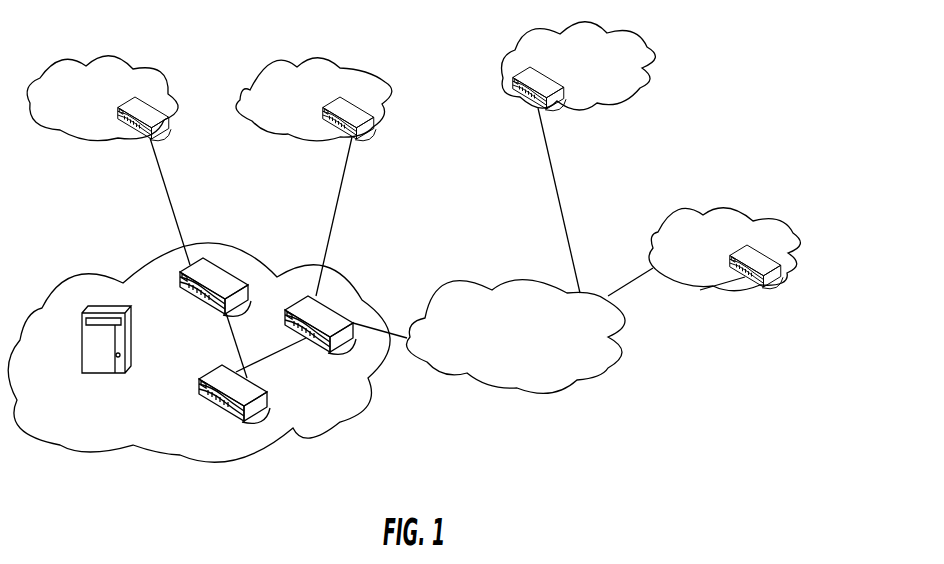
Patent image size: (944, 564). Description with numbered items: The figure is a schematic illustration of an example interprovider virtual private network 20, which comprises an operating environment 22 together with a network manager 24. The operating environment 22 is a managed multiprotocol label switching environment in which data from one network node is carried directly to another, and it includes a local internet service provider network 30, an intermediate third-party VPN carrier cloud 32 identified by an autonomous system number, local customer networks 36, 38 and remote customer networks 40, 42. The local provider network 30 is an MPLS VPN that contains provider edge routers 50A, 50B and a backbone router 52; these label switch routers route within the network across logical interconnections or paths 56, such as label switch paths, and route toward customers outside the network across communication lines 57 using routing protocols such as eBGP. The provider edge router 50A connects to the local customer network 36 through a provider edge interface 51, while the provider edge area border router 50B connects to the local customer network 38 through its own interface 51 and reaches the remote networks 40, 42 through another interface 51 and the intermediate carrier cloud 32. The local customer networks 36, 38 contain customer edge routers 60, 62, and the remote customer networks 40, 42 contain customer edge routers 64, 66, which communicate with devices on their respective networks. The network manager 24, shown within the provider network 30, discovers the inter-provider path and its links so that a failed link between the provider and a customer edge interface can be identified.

The interprovider virtual private network 20 is at (443, 146).
The operating environment 22 is at (431, 431).
The network manager 24 is at (106, 303).
The local internet service provider network 30 is at (78, 450).
The intermediate VPN carrier cloud 32 is at (608, 370).
The local customer network 36 is at (110, 60).
The local customer network 38 is at (312, 60).
The remote customer network 40 is at (588, 28).
The remote customer network 42 is at (729, 210).
The provider edge router 50A is at (218, 268).
The provider edge area border router 50B is at (336, 296).
The provider edge interface 51 is at (183, 271).
The backbone router 52 is at (256, 414).
The logical interconnection path 56 is at (243, 357).
The communication line 57 is at (177, 226).
The customer edge router 60 is at (148, 102).
The customer edge router 62 is at (357, 102).
The customer edge router 64 is at (522, 72).
The customer edge router 66 is at (758, 256).